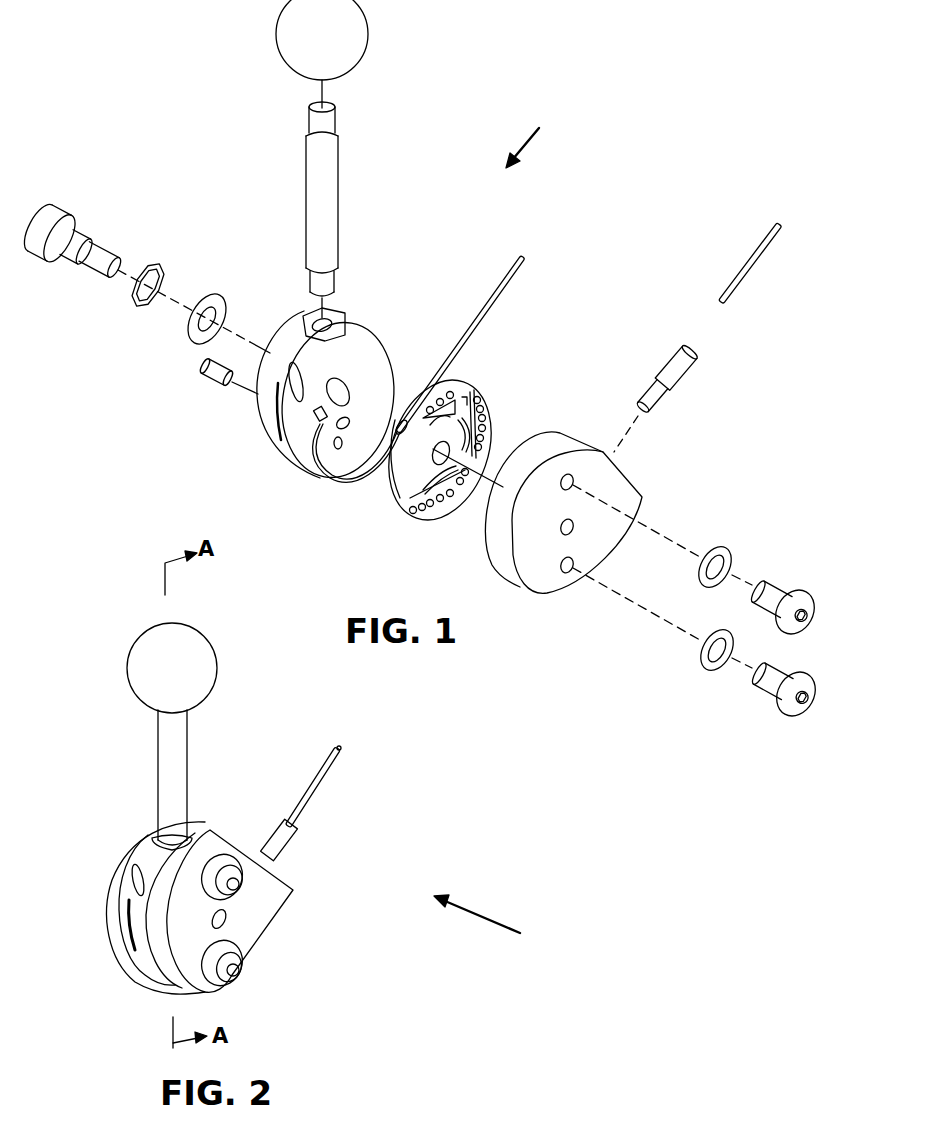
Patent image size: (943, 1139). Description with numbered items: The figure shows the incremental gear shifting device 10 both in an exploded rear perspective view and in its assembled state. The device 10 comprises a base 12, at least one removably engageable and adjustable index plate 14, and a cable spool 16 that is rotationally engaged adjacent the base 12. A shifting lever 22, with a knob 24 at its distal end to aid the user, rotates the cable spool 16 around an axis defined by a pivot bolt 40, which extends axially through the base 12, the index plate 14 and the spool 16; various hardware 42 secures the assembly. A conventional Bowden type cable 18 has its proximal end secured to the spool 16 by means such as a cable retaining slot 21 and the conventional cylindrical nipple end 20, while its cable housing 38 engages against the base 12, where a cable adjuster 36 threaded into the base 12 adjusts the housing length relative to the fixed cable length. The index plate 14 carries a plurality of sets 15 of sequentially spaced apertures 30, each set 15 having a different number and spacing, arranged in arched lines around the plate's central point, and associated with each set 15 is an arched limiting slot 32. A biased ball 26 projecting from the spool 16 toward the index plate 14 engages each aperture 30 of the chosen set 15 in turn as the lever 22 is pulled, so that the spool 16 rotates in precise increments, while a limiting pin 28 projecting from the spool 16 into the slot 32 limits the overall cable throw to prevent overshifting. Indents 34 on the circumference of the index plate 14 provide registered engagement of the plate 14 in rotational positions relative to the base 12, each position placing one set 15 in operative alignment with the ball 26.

In FIG. 1, the gear shifting device 10 is at (541, 131).
In FIG. 2, the gear shifting device 10 is at (498, 928).
In FIG. 1, the base 12 is at (538, 587).
In FIG. 2, the base 12 is at (253, 913).
In FIG. 1, the index plate 14 is at (390, 510).
In FIG. 1, the sets of apertures 15 is at (462, 384).
In FIG. 1, the cable spool 16 is at (262, 405).
In FIG. 2, the cable spool 16 is at (107, 900).
In FIG. 1, the cable 18 is at (477, 327).
In FIG. 2, the cable 18 is at (343, 750).
In FIG. 1, the cylindrical nipple end 20 is at (313, 443).
In FIG. 1, the cable retaining slot 21 is at (264, 424).
In FIG. 2, the cable retaining slot 21 is at (127, 957).
In FIG. 1, the shifting lever 22 is at (340, 218).
In FIG. 2, the shifting lever 22 is at (158, 753).
In FIG. 1, the knob 24 is at (363, 52).
In FIG. 2, the knob 24 is at (137, 680).
In FIG. 1, the biased ball 26 is at (212, 374).
In FIG. 1, the limiting pin 28 is at (345, 420).
In FIG. 1, the apertures 30 is at (487, 418).
In FIG. 1, the limiting slot 32 is at (424, 518).
In FIG. 1, the indents 34 is at (468, 382).
In FIG. 1, the cable adjuster 36 is at (652, 383).
In FIG. 2, the cable adjuster 36 is at (266, 828).
In FIG. 1, the cable housing 38 is at (731, 281).
In FIG. 2, the cable housing 38 is at (308, 803).
In FIG. 1, the pivot bolt 40 is at (64, 213).
In FIG. 1, the hardware 42 is at (765, 692).
In FIG. 2, the hardware 42 is at (243, 975).